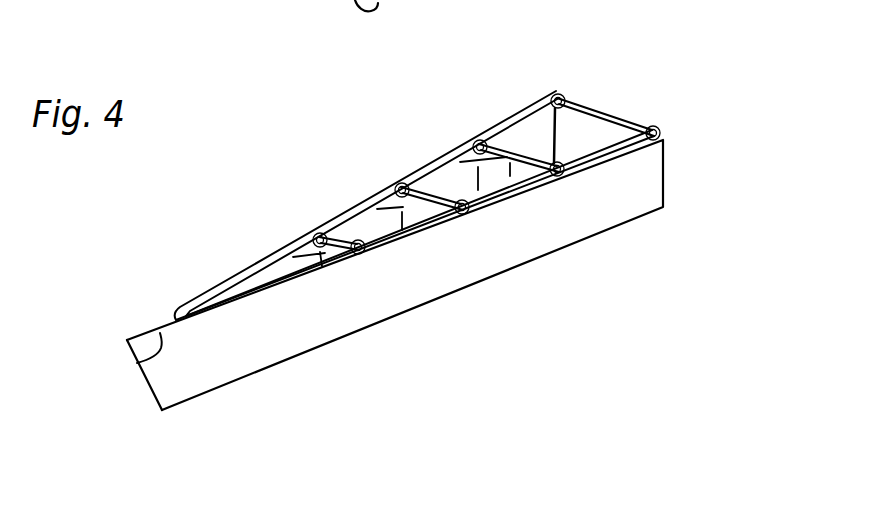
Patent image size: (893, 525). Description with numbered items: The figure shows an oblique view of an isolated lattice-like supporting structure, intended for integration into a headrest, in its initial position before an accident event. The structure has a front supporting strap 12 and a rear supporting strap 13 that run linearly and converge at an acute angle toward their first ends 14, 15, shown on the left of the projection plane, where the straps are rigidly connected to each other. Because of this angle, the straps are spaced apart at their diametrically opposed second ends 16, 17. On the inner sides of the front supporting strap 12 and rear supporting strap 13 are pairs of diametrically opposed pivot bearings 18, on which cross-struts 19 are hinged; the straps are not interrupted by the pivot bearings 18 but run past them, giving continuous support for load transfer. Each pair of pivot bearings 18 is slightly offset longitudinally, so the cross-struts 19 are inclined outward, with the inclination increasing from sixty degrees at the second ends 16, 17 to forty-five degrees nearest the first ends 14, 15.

The front supporting strap 12 is at (427, 328).
The rear supporting strap 13 is at (434, 141).
The first end 14 is at (137, 363).
The first end 15 is at (152, 326).
The second end 16 is at (703, 143).
The second end 17 is at (557, 97).
The pivot bearing 18 is at (537, 160).
The cross-strut 19 is at (357, 220).